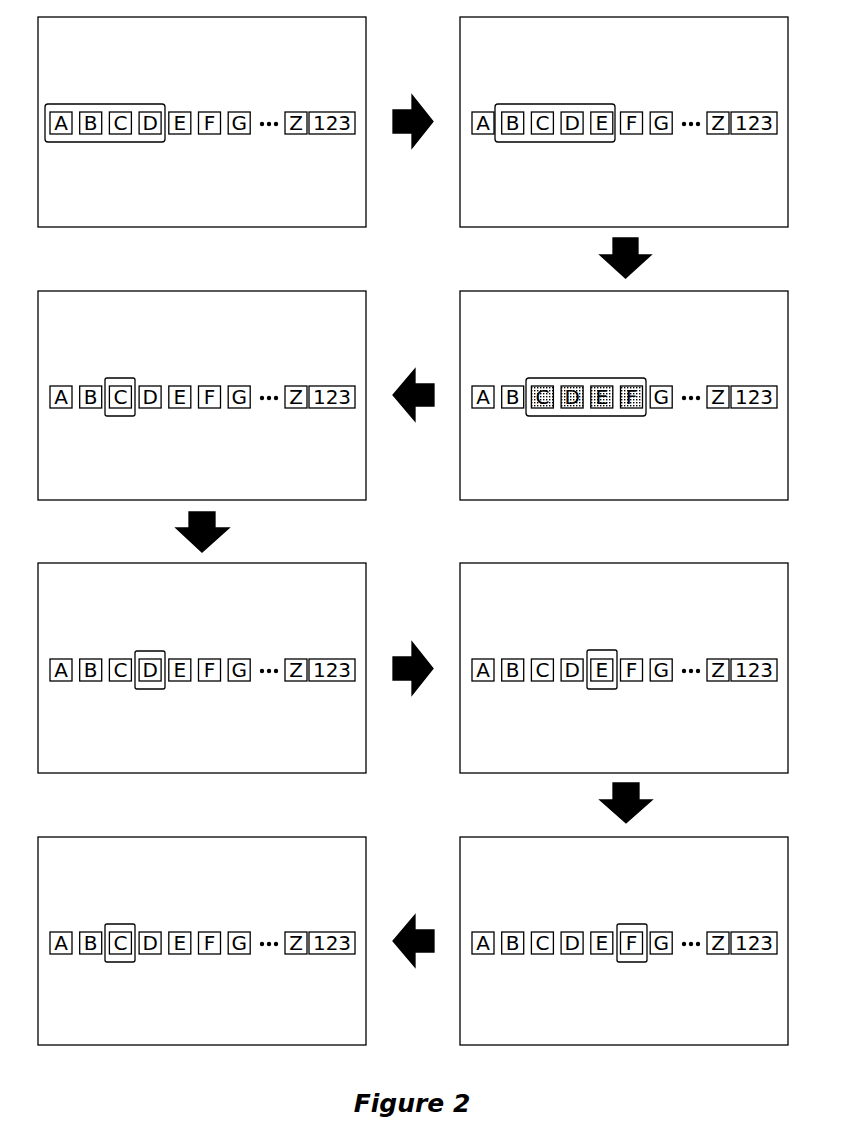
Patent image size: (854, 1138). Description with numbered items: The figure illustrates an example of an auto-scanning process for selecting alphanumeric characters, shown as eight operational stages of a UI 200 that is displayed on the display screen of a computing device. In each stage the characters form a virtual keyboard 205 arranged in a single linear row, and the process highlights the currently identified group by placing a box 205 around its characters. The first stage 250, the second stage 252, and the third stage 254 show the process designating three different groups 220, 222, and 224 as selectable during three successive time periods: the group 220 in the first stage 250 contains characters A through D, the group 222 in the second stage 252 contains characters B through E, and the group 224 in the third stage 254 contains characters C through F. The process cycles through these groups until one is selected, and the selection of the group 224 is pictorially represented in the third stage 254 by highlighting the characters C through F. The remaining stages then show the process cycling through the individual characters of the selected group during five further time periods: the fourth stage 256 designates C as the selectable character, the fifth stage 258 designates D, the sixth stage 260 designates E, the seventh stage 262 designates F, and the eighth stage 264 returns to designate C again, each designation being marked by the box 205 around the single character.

The UI 200 is at (357, 59).
The box 205 is at (166, 103).
The group 220 is at (107, 108).
The group 222 is at (556, 107).
The group 224 is at (584, 381).
The first stage 250 is at (200, 146).
The second stage 252 is at (624, 122).
The third stage 254 is at (624, 395).
The fourth stage 256 is at (202, 395).
The fifth stage 258 is at (202, 668).
The sixth stage 260 is at (624, 668).
The seventh stage 262 is at (624, 941).
The eighth stage 264 is at (202, 941).